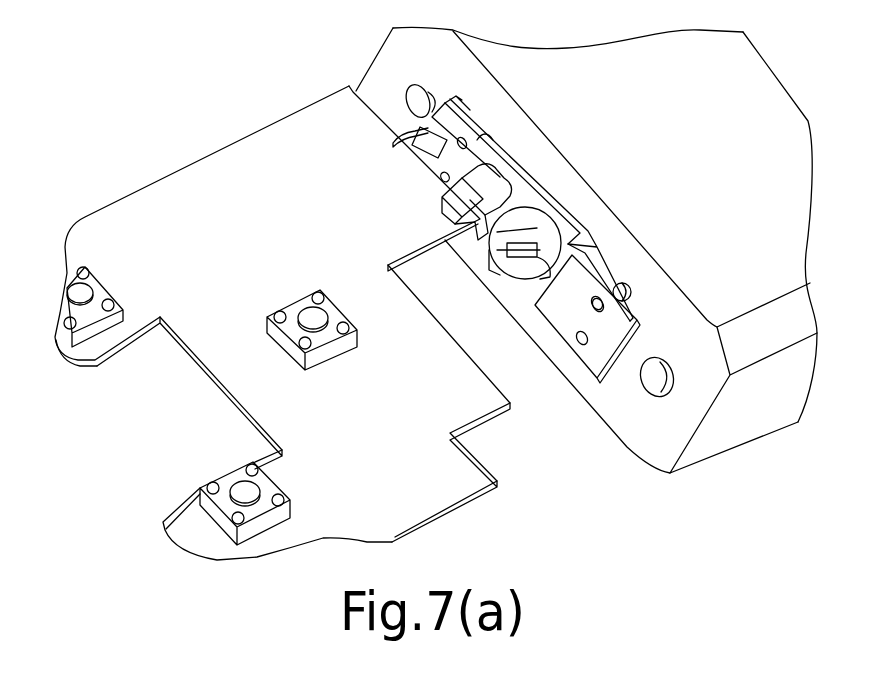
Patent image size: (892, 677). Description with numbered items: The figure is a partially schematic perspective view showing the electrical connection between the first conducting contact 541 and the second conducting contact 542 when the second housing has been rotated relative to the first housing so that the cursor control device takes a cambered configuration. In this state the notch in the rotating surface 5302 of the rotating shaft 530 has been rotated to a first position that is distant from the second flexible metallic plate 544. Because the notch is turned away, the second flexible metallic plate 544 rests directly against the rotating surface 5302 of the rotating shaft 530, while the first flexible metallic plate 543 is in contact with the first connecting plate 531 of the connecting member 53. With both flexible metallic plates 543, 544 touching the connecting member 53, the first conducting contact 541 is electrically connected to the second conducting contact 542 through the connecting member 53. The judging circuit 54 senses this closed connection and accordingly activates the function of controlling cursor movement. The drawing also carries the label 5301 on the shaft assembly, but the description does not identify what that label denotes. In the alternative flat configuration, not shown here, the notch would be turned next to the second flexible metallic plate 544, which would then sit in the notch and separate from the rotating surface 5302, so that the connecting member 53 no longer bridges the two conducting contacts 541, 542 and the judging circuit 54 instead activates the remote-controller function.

The connecting member 53 is at (597, 275).
The rotating shaft 530 is at (512, 263).
The first connecting plate 5301 is at (555, 225).
The rotating surface 5302 is at (540, 190).
The first connecting plate 531 is at (583, 317).
The judging circuit 54 is at (180, 205).
The first conducting contact 541 is at (397, 138).
The second conducting contact 542 is at (442, 202).
The first flexible metallic plate 543 is at (453, 107).
The second flexible metallic plate 544 is at (500, 173).